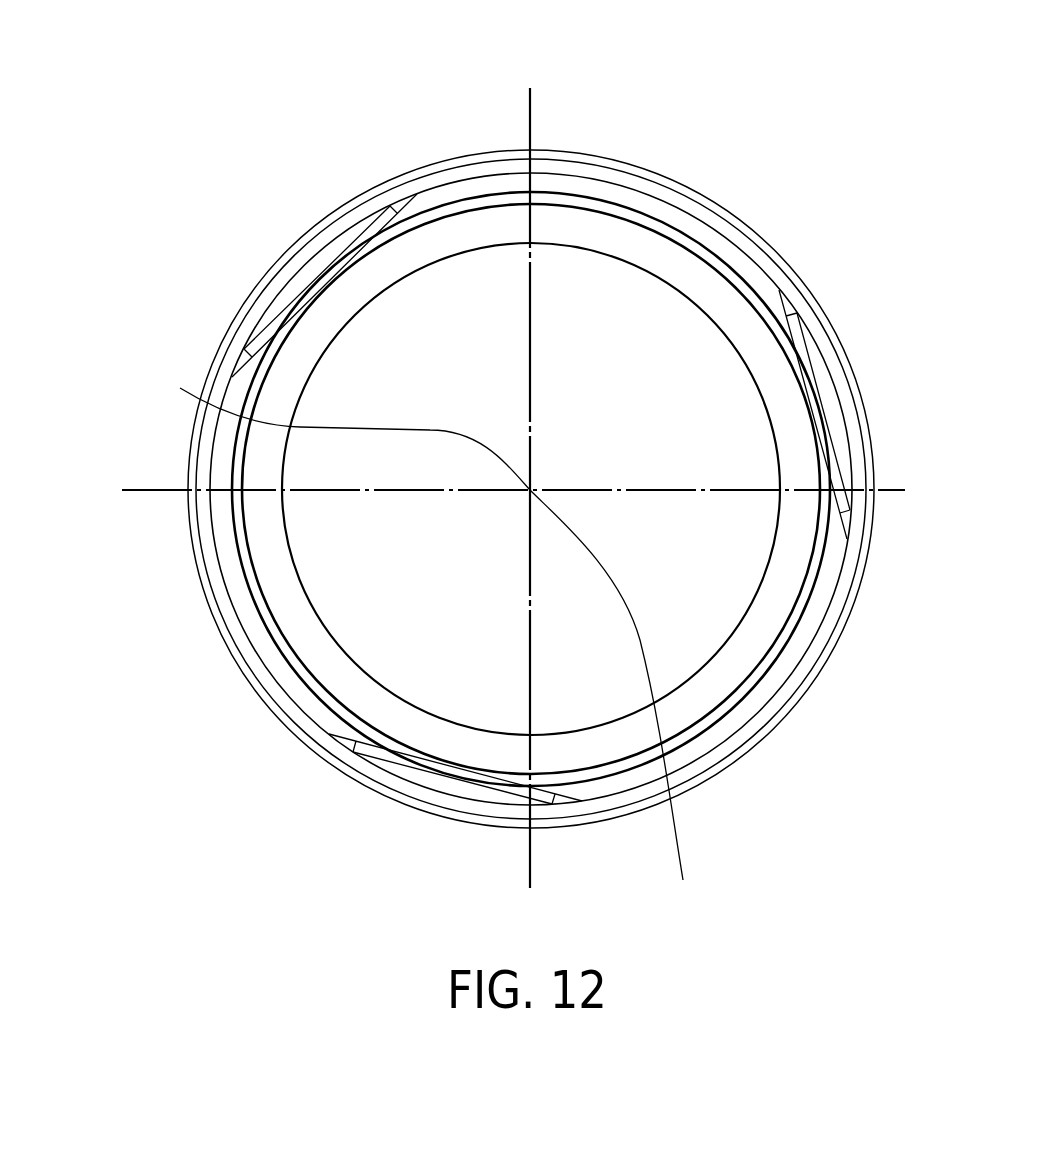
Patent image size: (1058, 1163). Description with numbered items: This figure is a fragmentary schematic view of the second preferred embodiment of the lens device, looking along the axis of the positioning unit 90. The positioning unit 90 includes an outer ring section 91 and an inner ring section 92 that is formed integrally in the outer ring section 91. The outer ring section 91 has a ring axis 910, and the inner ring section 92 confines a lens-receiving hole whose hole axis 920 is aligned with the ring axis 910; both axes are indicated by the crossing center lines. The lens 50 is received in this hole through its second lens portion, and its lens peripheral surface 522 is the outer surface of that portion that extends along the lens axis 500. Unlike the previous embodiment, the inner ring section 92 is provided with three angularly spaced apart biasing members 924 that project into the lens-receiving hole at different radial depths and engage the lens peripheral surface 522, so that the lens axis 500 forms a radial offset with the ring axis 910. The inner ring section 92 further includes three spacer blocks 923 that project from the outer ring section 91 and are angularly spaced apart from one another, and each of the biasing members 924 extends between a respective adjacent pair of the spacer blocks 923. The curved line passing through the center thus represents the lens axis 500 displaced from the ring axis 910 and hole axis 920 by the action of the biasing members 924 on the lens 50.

The lens 50 is at (687, 268).
The lens axis 500 is at (620, 703).
The lens peripheral surface 522 is at (735, 280).
The positioning unit 90 is at (352, 185).
The outer ring section 91 is at (418, 187).
The inner ring section 92 is at (586, 160).
The spacer blocks 923 is at (625, 193).
The biasing members 924 is at (318, 283).
The ring axis 910 is at (287, 431).
The hole axis 920 is at (287, 431).